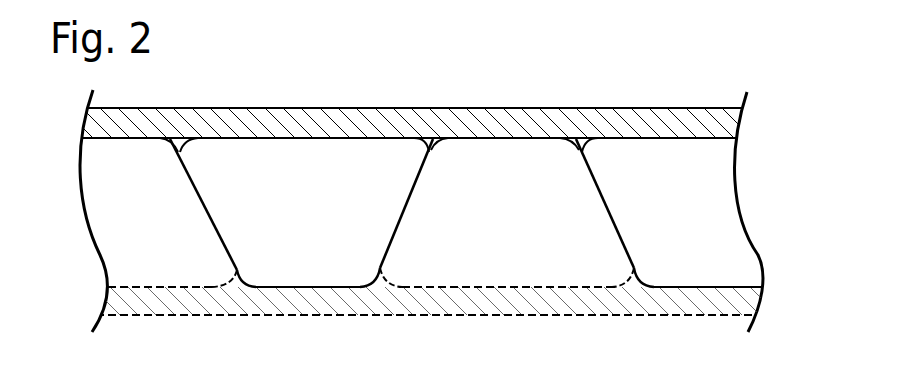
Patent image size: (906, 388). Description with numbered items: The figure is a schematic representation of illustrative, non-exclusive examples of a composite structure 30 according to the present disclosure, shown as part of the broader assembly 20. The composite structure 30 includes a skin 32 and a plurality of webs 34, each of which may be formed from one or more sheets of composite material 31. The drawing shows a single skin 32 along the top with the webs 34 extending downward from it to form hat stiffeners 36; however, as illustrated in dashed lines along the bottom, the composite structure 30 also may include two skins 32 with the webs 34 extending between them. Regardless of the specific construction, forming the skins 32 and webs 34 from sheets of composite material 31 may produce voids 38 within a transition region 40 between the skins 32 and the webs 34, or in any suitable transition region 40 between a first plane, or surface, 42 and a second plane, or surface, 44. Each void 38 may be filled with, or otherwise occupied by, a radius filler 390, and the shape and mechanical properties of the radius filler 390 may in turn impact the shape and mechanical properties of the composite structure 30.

The web 20 is at (652, 44).
The composite structure 30 is at (665, 77).
The sheet of composite material 31 is at (316, 114).
The skin 32 is at (268, 122).
The web 34 is at (212, 207).
The hat stiffener 36 is at (305, 292).
The void 38 is at (174, 133).
The radius filler 390 is at (184, 140).
The transition region 40 is at (163, 149).
The first plane, or surface 42 is at (491, 142).
The second plane, or surface 44 is at (593, 201).